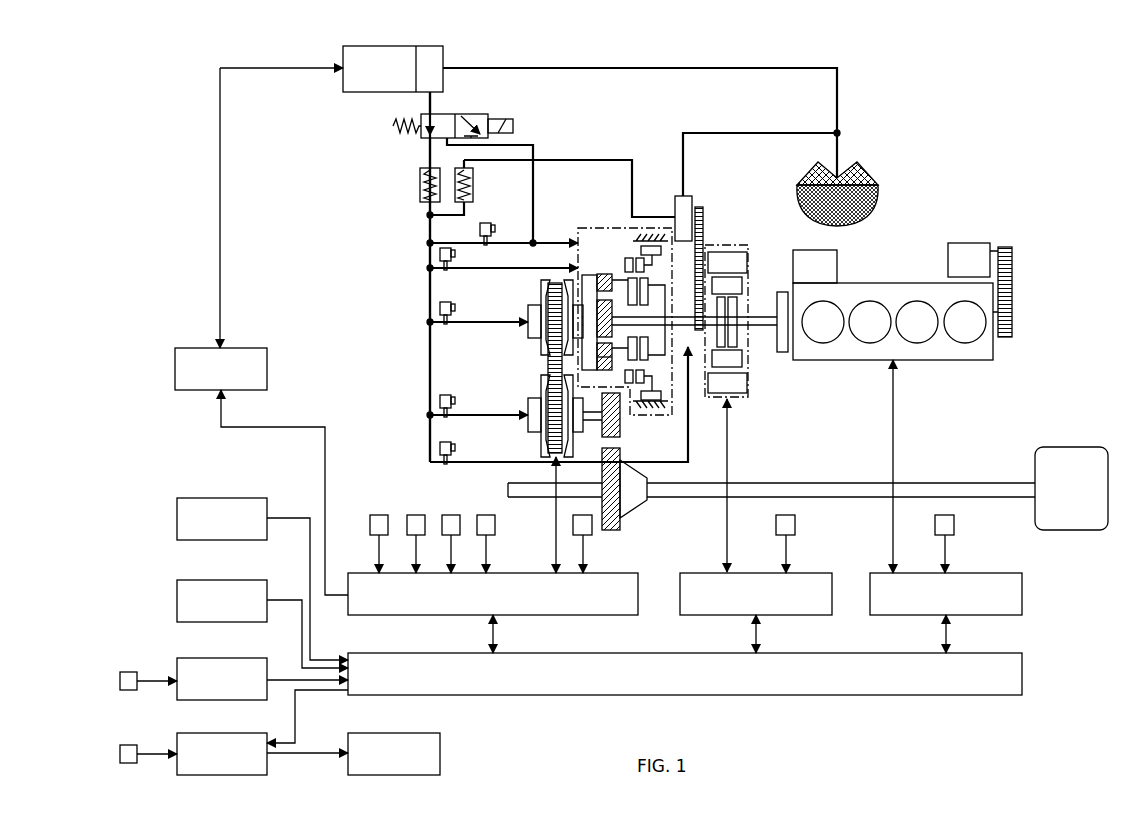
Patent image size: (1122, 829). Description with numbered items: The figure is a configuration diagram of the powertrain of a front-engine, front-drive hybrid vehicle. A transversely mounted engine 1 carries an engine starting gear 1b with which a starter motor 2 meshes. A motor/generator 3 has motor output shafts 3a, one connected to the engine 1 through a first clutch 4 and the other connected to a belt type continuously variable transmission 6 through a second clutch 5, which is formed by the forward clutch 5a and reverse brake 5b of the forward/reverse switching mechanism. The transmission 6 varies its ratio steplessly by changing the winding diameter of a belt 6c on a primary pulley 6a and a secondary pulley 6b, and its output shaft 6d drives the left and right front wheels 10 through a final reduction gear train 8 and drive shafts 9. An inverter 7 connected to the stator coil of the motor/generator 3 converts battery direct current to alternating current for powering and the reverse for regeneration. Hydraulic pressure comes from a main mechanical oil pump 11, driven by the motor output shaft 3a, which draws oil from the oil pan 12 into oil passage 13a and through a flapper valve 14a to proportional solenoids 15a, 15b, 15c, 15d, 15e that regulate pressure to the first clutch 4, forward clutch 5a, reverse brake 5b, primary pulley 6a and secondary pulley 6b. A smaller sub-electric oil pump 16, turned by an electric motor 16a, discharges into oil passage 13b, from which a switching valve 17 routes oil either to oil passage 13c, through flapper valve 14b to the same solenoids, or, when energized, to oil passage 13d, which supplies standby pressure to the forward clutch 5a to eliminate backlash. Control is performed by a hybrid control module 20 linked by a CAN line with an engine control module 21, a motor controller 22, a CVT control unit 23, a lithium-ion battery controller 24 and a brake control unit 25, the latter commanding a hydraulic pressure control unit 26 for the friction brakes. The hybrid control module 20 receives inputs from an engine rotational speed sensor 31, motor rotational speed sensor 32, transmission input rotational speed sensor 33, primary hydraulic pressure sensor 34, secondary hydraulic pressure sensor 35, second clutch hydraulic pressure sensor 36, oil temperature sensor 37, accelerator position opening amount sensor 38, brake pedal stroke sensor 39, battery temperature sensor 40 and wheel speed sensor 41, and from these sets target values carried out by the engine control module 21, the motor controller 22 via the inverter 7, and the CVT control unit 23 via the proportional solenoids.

The engine 1 is at (998, 352).
The engine starting gear 1b is at (1012, 295).
The starter motor 2 is at (968, 243).
The motor/generator 3 is at (718, 248).
The motor output shaft 3a is at (712, 328).
The first clutch 4 is at (740, 305).
The second clutch 5 is at (621, 293).
The forward clutch 5a is at (618, 287).
The reverse brake 5b is at (632, 278).
The belt type continuously variable transmission 6 is at (537, 426).
The primary pulley 6a is at (528, 326).
The secondary pulley 6b is at (530, 410).
The belt 6c is at (548, 370).
The output shaft 6d is at (592, 421).
The inverter 7 is at (190, 348).
The final reduction gear train 8 is at (627, 444).
The drive shaft 9 is at (522, 497).
The front wheel 10 is at (1087, 447).
The main mechanical oil pump 11 is at (676, 200).
The oil pan 12 is at (855, 166).
The oil passage 13a is at (601, 160).
The oil passage 13b is at (430, 100).
The oil passage 13c is at (430, 153).
The oil passage 13d is at (533, 148).
The flapper valve 14a is at (474, 190).
The flapper valve 14b is at (421, 185).
The proportional solenoid 15a is at (440, 450).
The proportional solenoid 15b is at (440, 256).
The proportional solenoid 15c is at (487, 225).
The proportional solenoid 15d is at (440, 312).
The proportional solenoid 15e is at (440, 404).
The sub-electric oil pump 16 is at (443, 52).
The electric motor 16a is at (343, 86).
The switching valve 17 is at (477, 114).
The hybrid control module 20 is at (1022, 668).
The engine control module 21 is at (1022, 590).
The motor controller 22 is at (812, 573).
The CVT control unit 23 is at (362, 573).
The lithium-ion battery controller 24 is at (190, 658).
The brake control unit 25 is at (190, 733).
The hydraulic pressure control unit 26 is at (440, 755).
The engine rotational speed sensor 31 is at (955, 522).
The motor rotational speed sensor 32 is at (795, 522).
The transmission input rotational speed sensor 33 is at (588, 535).
The primary hydraulic pressure sensor 34 is at (486, 515).
The secondary hydraulic pressure sensor 35 is at (451, 515).
The second clutch hydraulic pressure sensor 36 is at (416, 515).
The oil temperature sensor 37 is at (379, 515).
The accelerator position opening amount sensor 38 is at (190, 498).
The brake pedal stroke sensor 39 is at (190, 580).
The battery temperature sensor 40 is at (122, 672).
The wheel speed sensor 41 is at (122, 745).